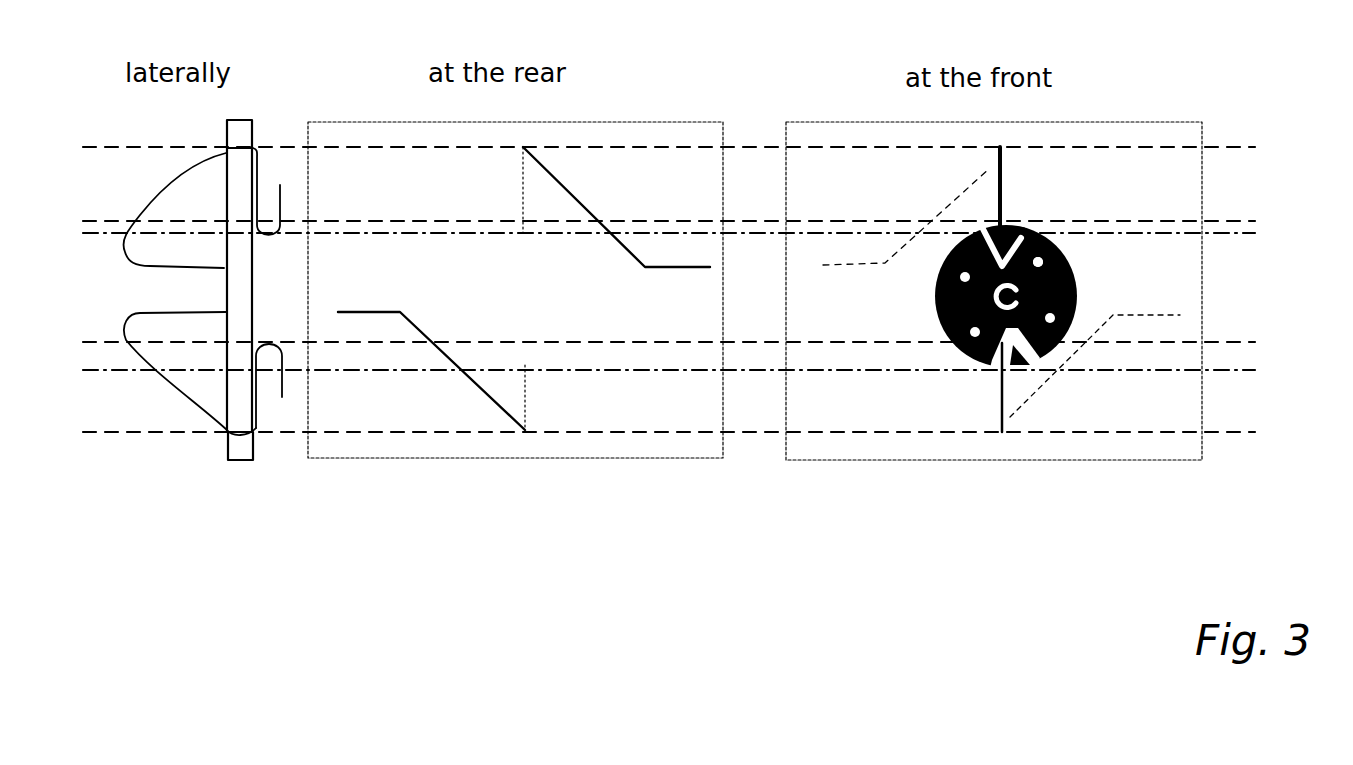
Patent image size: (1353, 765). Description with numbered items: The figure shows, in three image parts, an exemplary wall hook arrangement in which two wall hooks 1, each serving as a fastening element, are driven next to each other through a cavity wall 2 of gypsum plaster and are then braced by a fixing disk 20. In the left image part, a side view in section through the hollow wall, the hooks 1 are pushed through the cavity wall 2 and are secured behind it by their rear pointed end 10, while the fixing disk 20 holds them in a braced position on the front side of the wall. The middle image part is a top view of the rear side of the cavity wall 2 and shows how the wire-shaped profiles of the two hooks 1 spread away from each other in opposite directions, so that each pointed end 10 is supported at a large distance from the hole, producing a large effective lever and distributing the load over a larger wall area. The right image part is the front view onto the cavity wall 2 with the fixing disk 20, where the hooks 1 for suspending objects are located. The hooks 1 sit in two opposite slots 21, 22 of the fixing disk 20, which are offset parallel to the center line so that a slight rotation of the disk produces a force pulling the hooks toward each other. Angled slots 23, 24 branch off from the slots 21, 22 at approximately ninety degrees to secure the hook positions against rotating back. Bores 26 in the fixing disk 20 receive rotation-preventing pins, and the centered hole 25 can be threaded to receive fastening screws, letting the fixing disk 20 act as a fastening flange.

The wall hook 1 is at (216, 155).
The cavity wall 2 is at (243, 126).
The pointed end 10 is at (219, 277).
The fixing disk 20 is at (1078, 294).
The slot 21 is at (1035, 358).
The slot 22 is at (972, 235).
The angled slot 23 is at (1021, 232).
The angled slot 24 is at (1048, 241).
The centered hole in the fixing disk 25 is at (1073, 263).
The bores in the fixing disk 26 is at (965, 352).